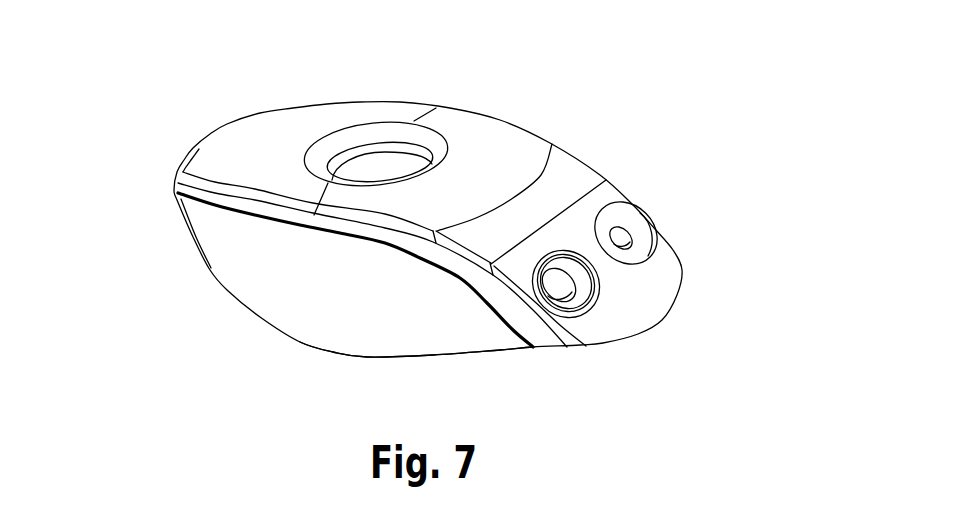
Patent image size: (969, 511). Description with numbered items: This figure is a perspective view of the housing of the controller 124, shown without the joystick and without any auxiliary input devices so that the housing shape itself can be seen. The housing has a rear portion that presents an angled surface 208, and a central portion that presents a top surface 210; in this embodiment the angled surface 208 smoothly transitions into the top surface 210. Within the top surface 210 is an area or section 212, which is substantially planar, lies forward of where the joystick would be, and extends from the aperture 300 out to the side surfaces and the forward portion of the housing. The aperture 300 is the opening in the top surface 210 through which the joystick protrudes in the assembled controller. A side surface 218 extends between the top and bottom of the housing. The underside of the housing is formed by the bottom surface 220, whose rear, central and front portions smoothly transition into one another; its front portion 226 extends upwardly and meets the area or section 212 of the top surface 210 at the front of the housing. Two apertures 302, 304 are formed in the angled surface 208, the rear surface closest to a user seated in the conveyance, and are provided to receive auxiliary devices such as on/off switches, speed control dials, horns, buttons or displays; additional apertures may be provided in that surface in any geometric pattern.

The controller 124 is at (642, 46).
The angled surface 208 is at (648, 291).
The top surface 210 is at (490, 150).
The area or section of top surface 212 is at (268, 146).
The side surface 218 is at (369, 302).
The bottom surface 220 is at (346, 384).
The front portion of bottom surface 226 is at (218, 273).
The aperture 300 is at (373, 121).
The aperture 302 is at (578, 316).
The aperture 304 is at (643, 220).